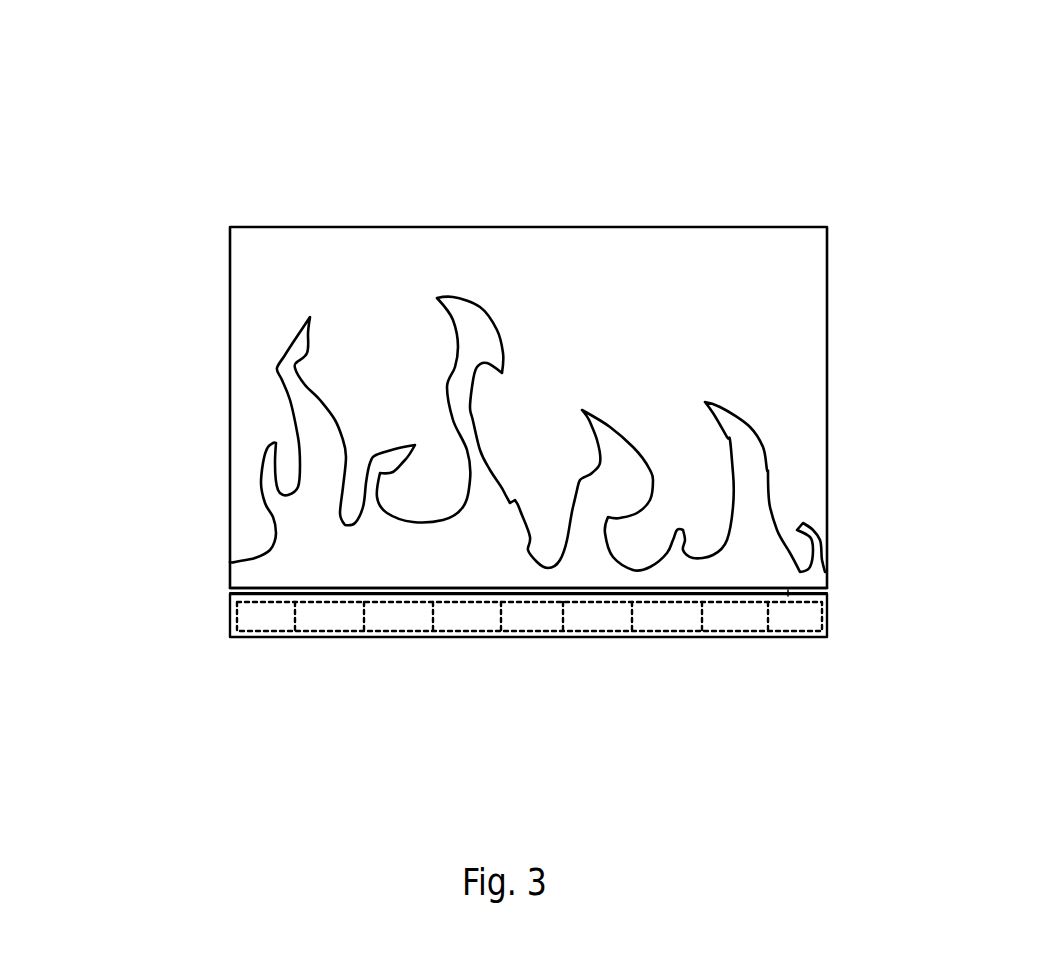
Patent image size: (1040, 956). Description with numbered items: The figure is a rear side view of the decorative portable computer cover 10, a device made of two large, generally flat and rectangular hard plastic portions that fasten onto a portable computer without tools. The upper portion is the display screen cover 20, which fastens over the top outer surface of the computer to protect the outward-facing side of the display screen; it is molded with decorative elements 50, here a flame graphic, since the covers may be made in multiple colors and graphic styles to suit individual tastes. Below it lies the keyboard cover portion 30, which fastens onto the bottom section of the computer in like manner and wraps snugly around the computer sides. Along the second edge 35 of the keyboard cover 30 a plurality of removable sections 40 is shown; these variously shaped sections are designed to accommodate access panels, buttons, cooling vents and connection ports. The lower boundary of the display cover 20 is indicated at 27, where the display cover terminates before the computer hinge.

The portable computer cover 10 is at (925, 190).
The display screen cover 20 is at (793, 386).
The lower edge of display panel 27 is at (263, 575).
The keyboard cover portion 30 is at (827, 600).
The second edge 35 is at (825, 622).
The removable sections 40 is at (265, 616).
The decorative elements 50 is at (493, 317).